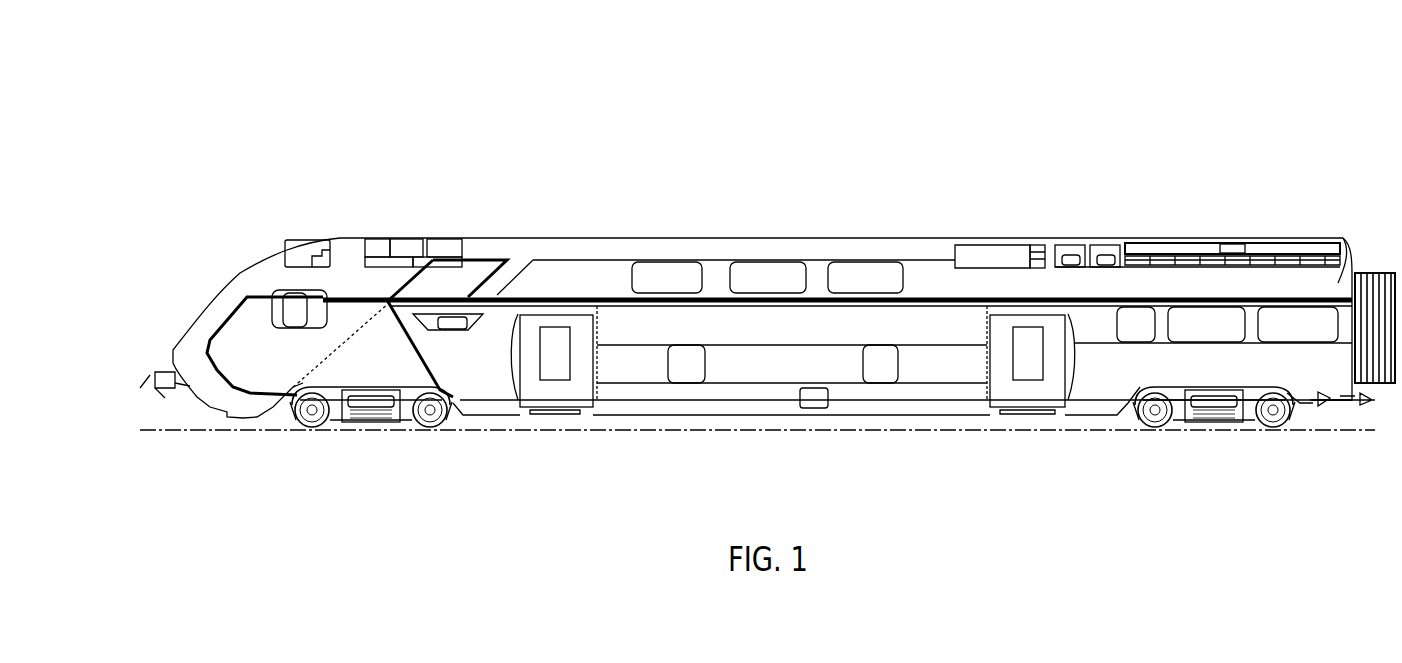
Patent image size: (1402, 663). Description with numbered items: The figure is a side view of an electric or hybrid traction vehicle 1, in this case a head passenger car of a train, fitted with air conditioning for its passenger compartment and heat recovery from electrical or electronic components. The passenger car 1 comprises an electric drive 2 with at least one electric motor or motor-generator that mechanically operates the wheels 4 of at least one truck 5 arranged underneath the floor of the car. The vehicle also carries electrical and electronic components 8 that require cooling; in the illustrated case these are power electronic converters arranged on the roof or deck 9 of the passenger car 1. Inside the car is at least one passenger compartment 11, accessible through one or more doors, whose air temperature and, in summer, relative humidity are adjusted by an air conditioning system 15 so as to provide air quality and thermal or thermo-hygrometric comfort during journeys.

The vehicle 1 is at (1286, 84).
The electric drive 2 is at (1308, 240).
The wheels 4 is at (302, 430).
The truck 5 is at (375, 428).
The electrical/electronic components 8 is at (1265, 242).
The roof or deck 9 is at (1343, 275).
The passenger compartment 11 is at (855, 292).
The air conditioning system 15 is at (1036, 242).